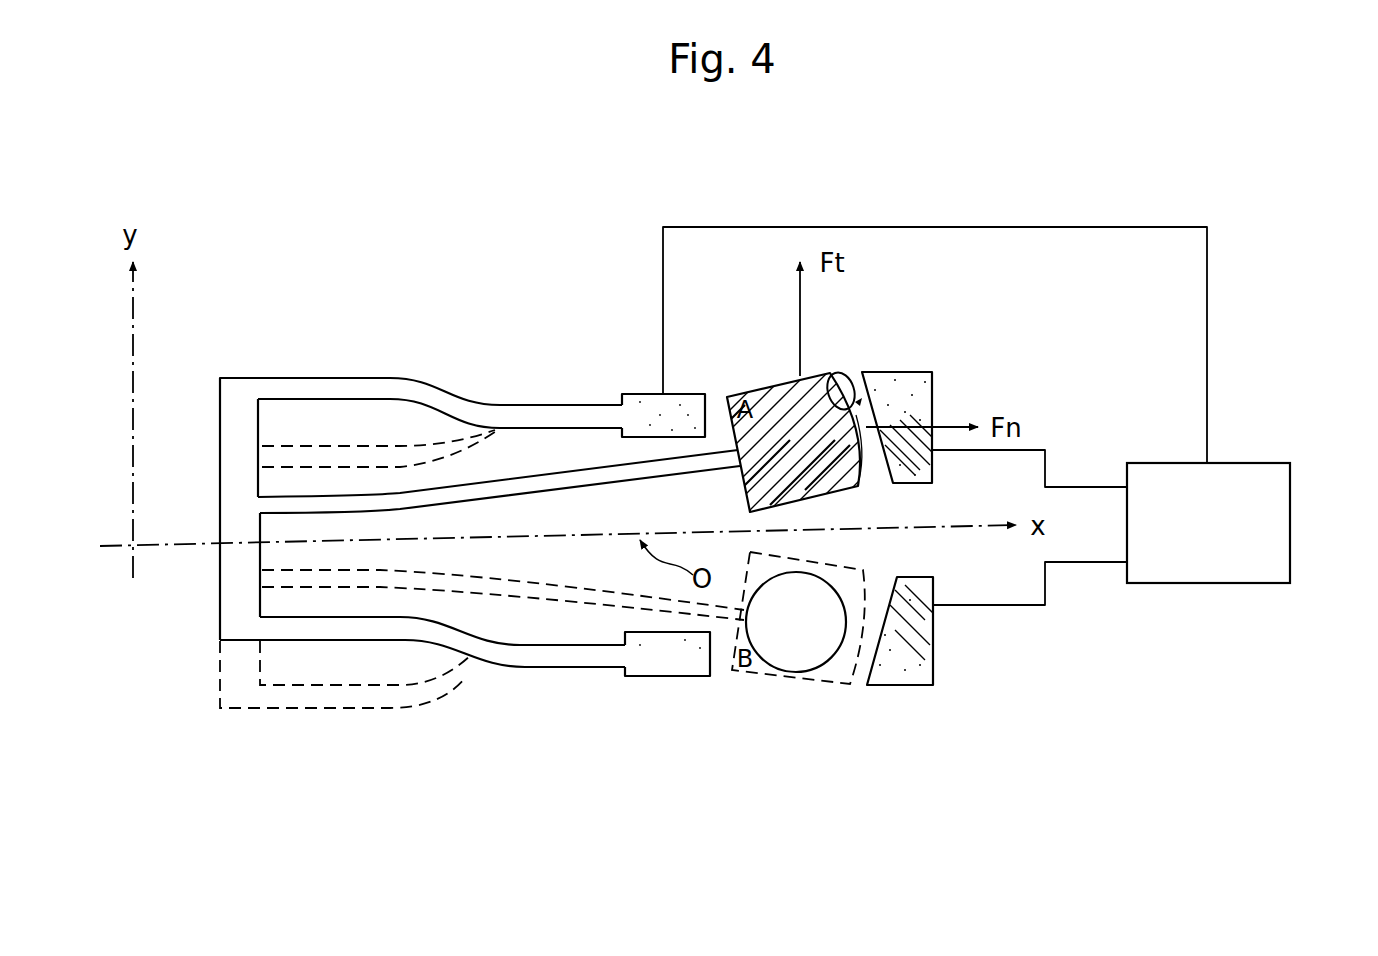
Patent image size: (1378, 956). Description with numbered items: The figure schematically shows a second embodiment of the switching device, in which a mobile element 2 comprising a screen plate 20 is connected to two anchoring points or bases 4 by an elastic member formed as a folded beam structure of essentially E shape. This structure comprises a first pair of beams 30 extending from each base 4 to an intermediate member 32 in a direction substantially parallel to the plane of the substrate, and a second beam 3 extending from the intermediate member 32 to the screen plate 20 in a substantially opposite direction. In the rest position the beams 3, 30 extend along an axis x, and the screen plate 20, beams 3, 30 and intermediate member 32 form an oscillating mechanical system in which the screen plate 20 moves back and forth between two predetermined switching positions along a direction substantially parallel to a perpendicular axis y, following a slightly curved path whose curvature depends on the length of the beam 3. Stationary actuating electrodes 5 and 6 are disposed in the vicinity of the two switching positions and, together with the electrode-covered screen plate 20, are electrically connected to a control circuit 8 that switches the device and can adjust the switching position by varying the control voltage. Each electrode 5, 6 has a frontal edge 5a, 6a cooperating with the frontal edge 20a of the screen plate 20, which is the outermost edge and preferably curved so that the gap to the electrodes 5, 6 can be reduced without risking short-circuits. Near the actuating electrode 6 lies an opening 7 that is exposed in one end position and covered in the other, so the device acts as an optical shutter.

The mobile element 2 is at (797, 473).
The second beam 3 is at (596, 478).
The base 4 is at (630, 402).
The actuating electrode 5 is at (915, 385).
The frontal edge 5a is at (831, 376).
The actuating electrode 6 is at (920, 672).
The frontal edge 6a is at (867, 658).
The opening 7 is at (795, 648).
The control circuit 8 is at (1275, 540).
The screen plate 20 is at (778, 392).
The frontal edge 20a is at (874, 471).
The first beams 30 is at (415, 388).
The intermediate member 32 is at (230, 417).